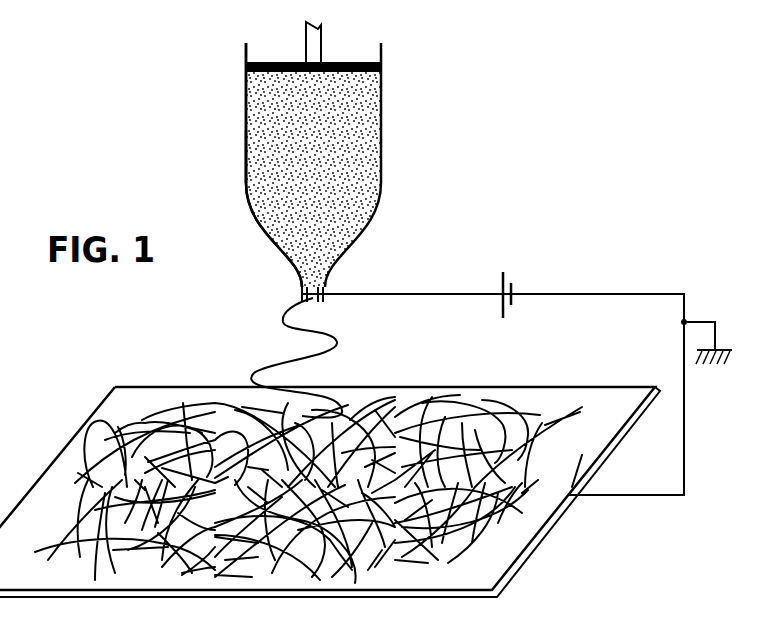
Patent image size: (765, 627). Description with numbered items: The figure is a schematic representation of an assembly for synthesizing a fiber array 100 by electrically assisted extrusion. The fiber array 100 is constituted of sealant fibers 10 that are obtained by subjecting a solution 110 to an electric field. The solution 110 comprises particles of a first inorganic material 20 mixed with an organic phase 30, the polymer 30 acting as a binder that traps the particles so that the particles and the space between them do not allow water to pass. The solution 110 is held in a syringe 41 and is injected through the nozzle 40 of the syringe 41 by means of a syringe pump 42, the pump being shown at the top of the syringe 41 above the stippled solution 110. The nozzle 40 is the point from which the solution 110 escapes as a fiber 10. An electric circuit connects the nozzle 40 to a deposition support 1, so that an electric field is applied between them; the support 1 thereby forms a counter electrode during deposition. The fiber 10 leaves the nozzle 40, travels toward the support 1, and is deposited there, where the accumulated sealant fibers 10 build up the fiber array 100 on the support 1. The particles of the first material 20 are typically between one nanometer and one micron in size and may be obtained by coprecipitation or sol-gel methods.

The deposition support 1 is at (72, 465).
The sealant fiber 10 is at (265, 362).
The first inorganic material 20 is at (371, 160).
The organic phase 30 is at (354, 125).
The nozzle 40 is at (324, 297).
The syringe 41 is at (246, 105).
The syringe pump 42 is at (350, 62).
The fiber array 100 is at (133, 428).
The solution 110 is at (251, 158).